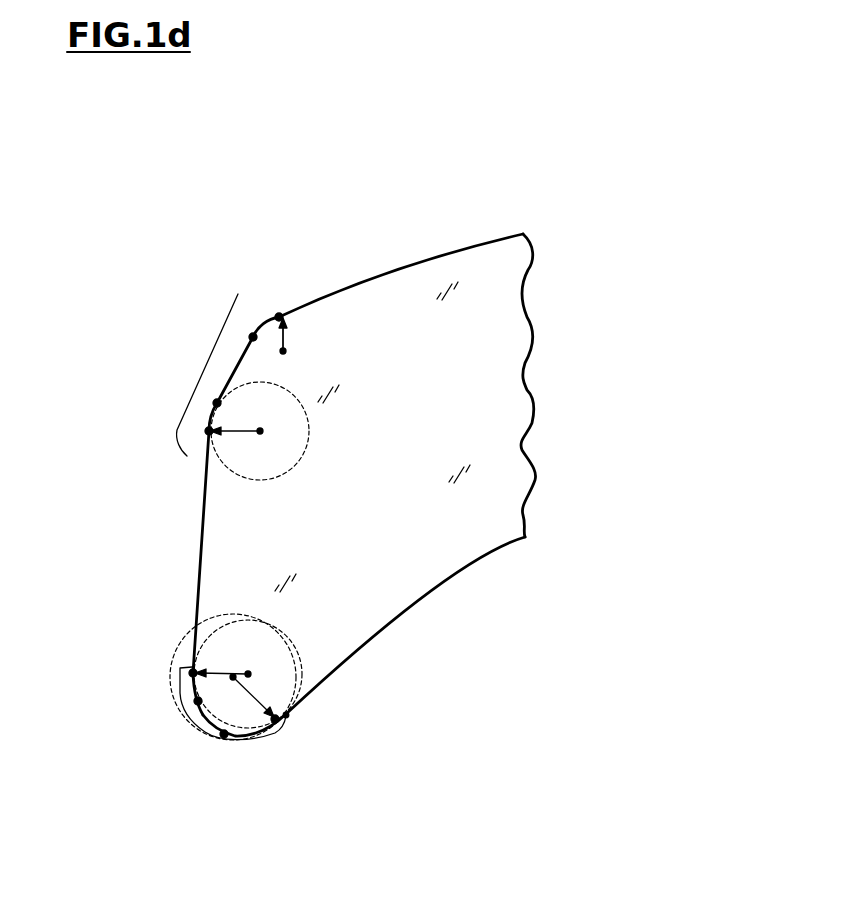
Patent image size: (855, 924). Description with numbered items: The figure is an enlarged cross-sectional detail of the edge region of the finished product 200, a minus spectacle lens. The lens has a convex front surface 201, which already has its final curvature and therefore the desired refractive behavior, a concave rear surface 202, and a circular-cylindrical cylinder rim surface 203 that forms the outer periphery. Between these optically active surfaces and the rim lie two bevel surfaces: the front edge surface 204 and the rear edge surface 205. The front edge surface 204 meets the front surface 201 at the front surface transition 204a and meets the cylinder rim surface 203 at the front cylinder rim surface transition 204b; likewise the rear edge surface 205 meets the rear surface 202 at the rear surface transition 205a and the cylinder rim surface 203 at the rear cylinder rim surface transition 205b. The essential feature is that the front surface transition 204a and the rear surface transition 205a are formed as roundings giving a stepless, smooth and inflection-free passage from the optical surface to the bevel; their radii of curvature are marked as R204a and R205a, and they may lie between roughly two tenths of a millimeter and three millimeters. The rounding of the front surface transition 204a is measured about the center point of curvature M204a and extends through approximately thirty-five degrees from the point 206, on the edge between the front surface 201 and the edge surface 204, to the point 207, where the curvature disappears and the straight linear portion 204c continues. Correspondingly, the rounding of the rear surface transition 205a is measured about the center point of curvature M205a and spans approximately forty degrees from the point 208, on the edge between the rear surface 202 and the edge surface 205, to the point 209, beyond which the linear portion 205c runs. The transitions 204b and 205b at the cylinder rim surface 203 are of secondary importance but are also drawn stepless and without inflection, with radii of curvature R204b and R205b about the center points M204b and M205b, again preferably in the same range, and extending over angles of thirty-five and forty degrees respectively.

The finished product of a minus spectacle lens 200 is at (439, 222).
The convex front surface 201 is at (373, 273).
The concave rear surface 202 is at (425, 594).
The cylinder rim surface 203 is at (201, 545).
The front edge surface 204 is at (165, 313).
The front surface transition 204a is at (254, 336).
The front cylinder rim surface transition 204b is at (208, 431).
The linear portion 204c is at (231, 377).
The rear edge surface 205 is at (178, 770).
The rear surface transition 205a is at (258, 738).
The rear cylinder rim surface transition 205b is at (181, 694).
The linear portion 205c is at (200, 727).
The point on the edge between the front surface and the edge surface 206 is at (280, 316).
The point at which the curvature disappears 207 is at (260, 292).
The point on the edge between the rear surface and the edge surface 208 is at (287, 716).
The point at which the curvature disappears 209 is at (224, 735).
The center point of curvature M204a is at (289, 346).
The radius of curvature R204a is at (284, 334).
The center point of curvature M204b is at (257, 417).
The radius of curvature R204b is at (242, 434).
The center point of curvature M205a is at (241, 695).
The radius of curvature R205a is at (273, 713).
The center point of curvature M205b is at (242, 661).
The radius of curvature R205b is at (209, 672).